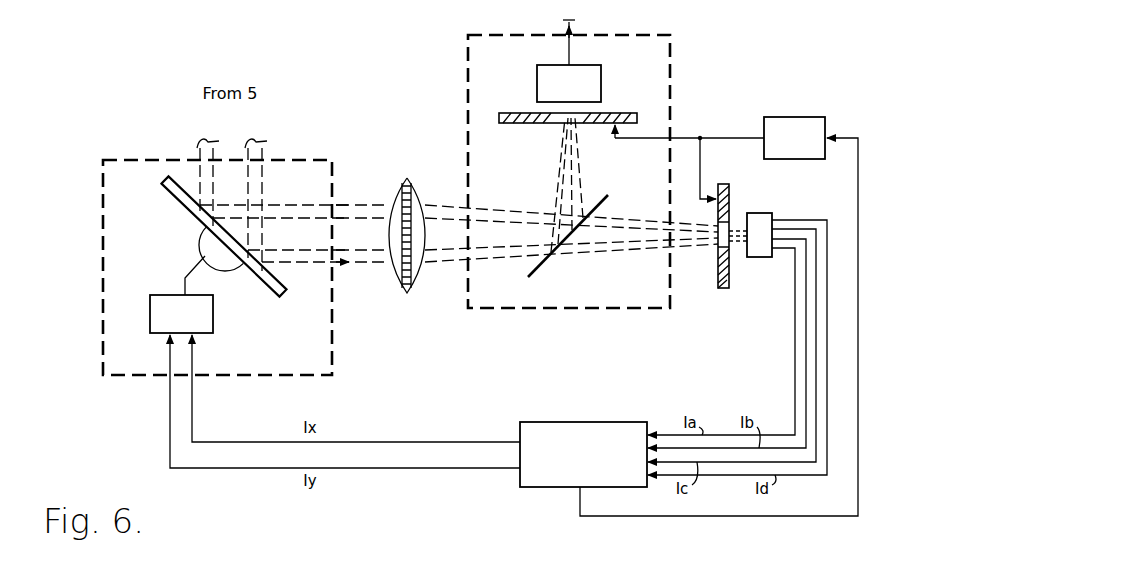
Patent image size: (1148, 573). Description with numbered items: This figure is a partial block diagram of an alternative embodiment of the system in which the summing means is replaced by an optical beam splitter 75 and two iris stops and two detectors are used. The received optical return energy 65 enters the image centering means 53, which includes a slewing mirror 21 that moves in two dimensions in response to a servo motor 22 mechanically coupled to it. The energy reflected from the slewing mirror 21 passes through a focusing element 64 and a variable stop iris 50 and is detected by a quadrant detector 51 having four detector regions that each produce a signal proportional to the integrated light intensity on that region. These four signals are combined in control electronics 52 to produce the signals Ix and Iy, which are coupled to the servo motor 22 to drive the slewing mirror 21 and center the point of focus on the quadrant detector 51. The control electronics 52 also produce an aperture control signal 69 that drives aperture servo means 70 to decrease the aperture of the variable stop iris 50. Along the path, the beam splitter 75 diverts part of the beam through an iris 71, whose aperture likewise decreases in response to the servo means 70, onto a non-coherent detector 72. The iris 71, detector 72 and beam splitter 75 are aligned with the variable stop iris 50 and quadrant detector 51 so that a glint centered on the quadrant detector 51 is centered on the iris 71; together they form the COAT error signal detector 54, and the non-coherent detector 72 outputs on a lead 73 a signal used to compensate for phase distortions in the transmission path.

The slewing mirror 21 is at (181, 201).
The servo motor 22 is at (215, 334).
The variable stop iris 50 is at (724, 184).
The quadrant detector 51 is at (766, 213).
The control electronics 52 is at (648, 422).
The image centering means 53 is at (113, 158).
The COAT error signal detector 54 is at (672, 38).
The focusing element 64 is at (409, 178).
The optical return energy 65 is at (258, 141).
The aperture control signal 69 is at (860, 316).
The aperture servo means 70 is at (728, 145).
The iris 71 is at (637, 113).
The non-coherent detector 72 is at (540, 65).
The lead 73 is at (572, 50).
The optical beam splitter 75 is at (532, 280).